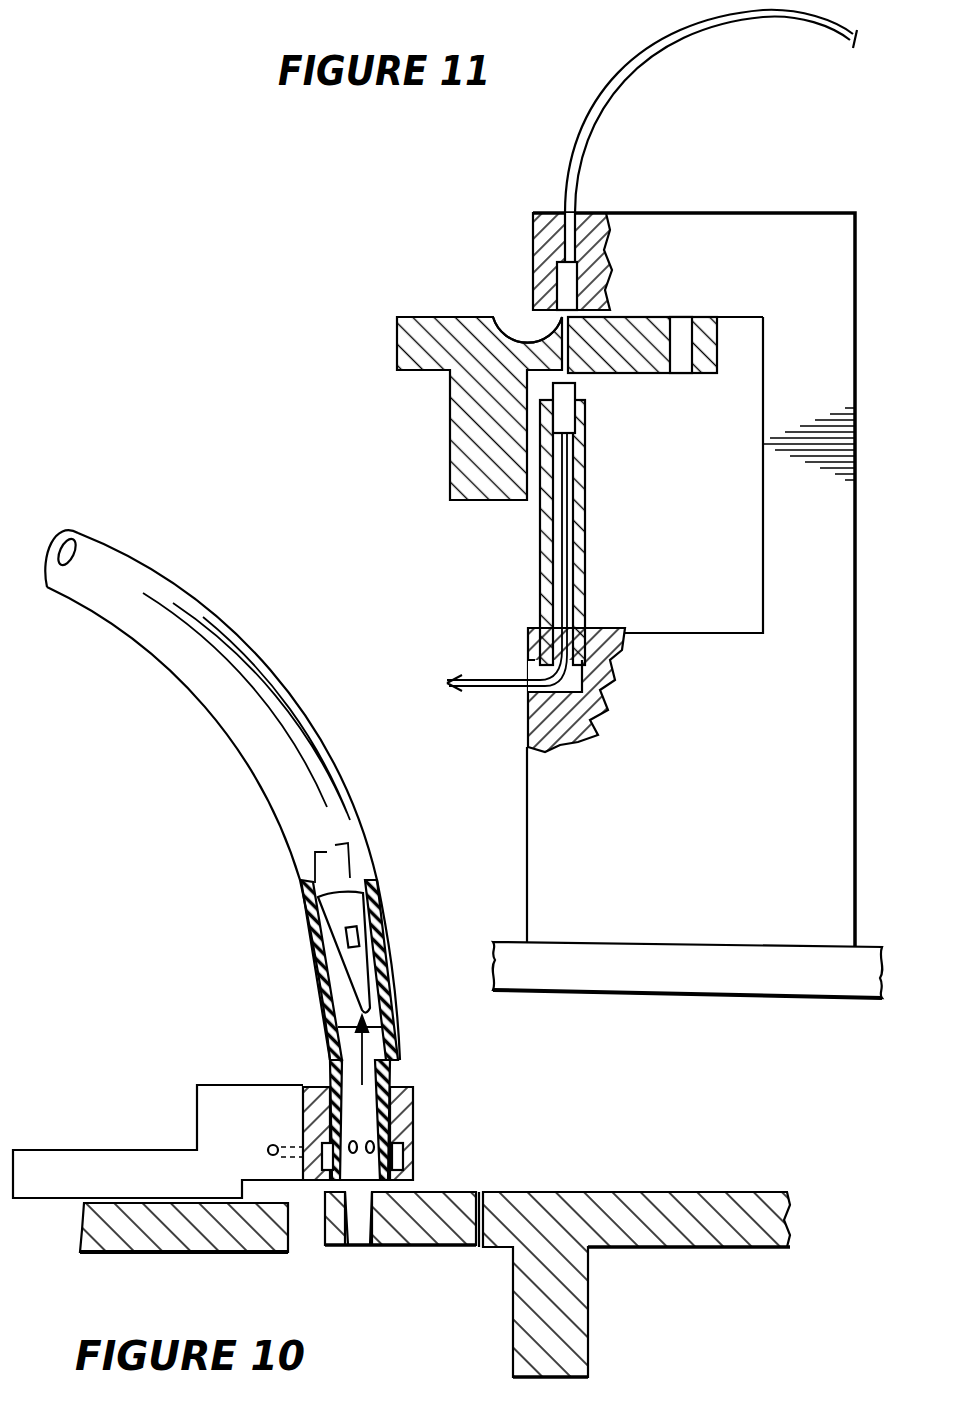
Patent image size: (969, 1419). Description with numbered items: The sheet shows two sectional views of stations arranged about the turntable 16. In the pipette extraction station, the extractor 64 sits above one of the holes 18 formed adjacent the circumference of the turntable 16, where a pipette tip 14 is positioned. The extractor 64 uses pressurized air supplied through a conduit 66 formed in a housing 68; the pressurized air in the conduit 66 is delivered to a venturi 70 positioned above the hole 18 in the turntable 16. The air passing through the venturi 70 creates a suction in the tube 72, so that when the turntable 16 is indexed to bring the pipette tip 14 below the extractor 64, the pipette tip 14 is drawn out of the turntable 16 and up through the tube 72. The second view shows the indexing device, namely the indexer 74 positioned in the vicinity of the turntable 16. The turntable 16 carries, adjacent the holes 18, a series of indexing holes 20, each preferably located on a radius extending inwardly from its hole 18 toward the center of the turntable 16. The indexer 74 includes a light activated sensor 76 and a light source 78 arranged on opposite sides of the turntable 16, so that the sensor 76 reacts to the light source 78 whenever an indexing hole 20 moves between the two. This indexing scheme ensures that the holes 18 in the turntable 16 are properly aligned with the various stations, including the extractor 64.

In FIG. 10, the pipette tip 14 is at (348, 908).
In FIG. 11, the turntable 16 is at (430, 333).
In FIG. 10, the turntable 16 is at (557, 1213).
In FIG. 11, the hole 18 is at (687, 357).
In FIG. 10, the hole 18 is at (347, 1220).
In FIG. 11, the indexing hole 20 is at (496, 335).
In FIG. 10, the extractor 64 is at (219, 961).
In FIG. 10, the conduit 66 is at (277, 1143).
In FIG. 10, the housing 68 is at (213, 1113).
In FIG. 10, the venturi 70 is at (360, 1113).
In FIG. 10, the tube 72 is at (265, 675).
In FIG. 11, the indexer 74 is at (398, 428).
In FIG. 11, the light activated sensor 76 is at (562, 413).
In FIG. 11, the light source 78 is at (567, 283).